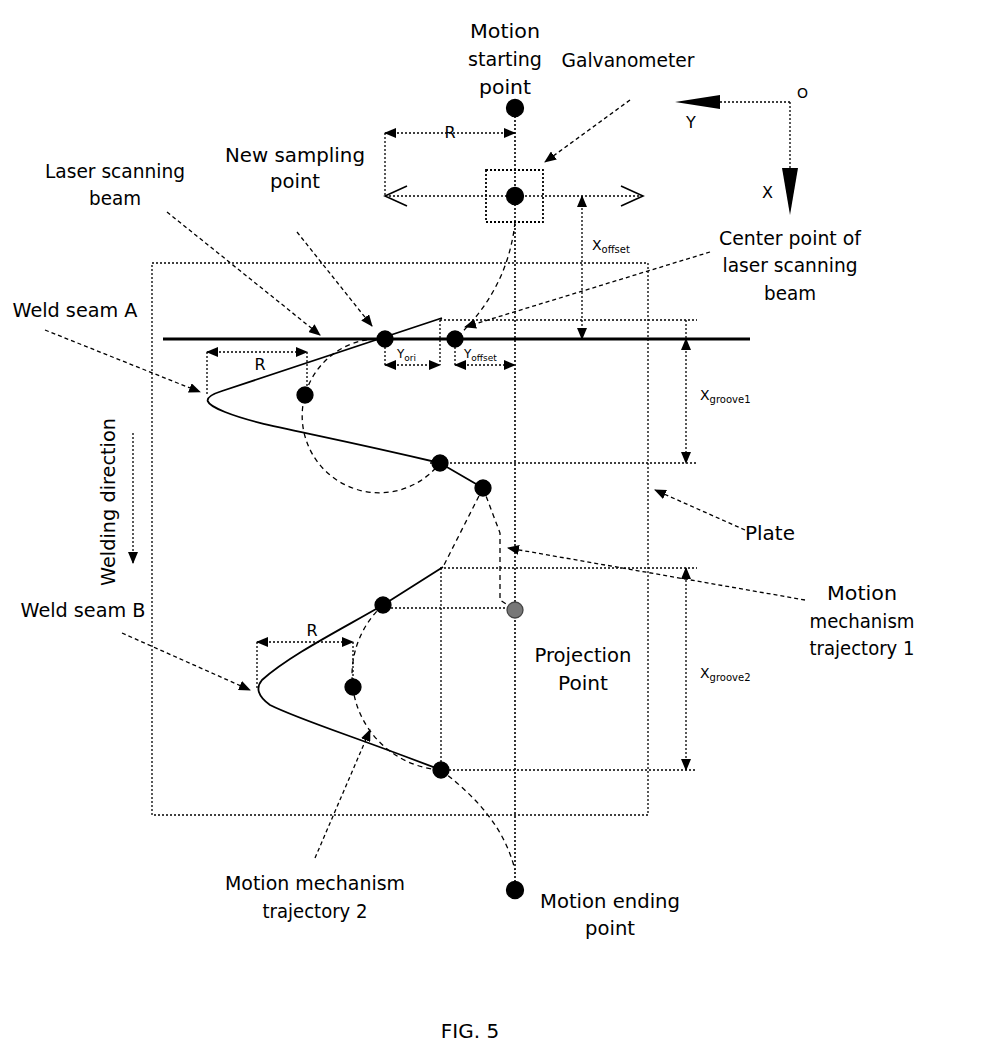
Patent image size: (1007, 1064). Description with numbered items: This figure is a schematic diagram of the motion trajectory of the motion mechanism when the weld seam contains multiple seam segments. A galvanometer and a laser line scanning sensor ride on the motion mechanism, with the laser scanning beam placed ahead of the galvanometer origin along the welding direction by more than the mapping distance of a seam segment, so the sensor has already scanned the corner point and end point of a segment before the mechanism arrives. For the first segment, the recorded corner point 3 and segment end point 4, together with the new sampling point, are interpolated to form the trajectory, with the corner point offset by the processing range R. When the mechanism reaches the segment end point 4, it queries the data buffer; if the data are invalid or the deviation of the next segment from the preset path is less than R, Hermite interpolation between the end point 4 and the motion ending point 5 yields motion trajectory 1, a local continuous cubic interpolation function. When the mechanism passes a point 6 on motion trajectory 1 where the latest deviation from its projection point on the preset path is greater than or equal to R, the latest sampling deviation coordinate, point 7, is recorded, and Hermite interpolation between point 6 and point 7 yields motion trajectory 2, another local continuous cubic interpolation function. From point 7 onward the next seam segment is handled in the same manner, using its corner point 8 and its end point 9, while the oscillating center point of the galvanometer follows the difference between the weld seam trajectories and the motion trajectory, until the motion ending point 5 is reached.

The motion trajectory 1 is at (584, 191).
The motion trajectory 2 is at (304, 279).
The target point 3 (Xtarget3, Ytarget3 - R) 3 is at (295, 405).
The target point 4 (Xtarget4, Ytarget4) 4 is at (427, 468).
The target point 5 (motion ending point, Xtarget5, Ytarget5) 5 is at (573, 882).
The target point 6 (Xtarget6, Ytarget6) 6 is at (507, 501).
The target point 7 (Xtarget7, Ytarget7) 7 is at (375, 598).
The target point 8 (Xtarget8, Ytarget8 - R) 8 is at (342, 694).
The target point 9 (Xtarget9, Ytarget9) 9 is at (427, 778).